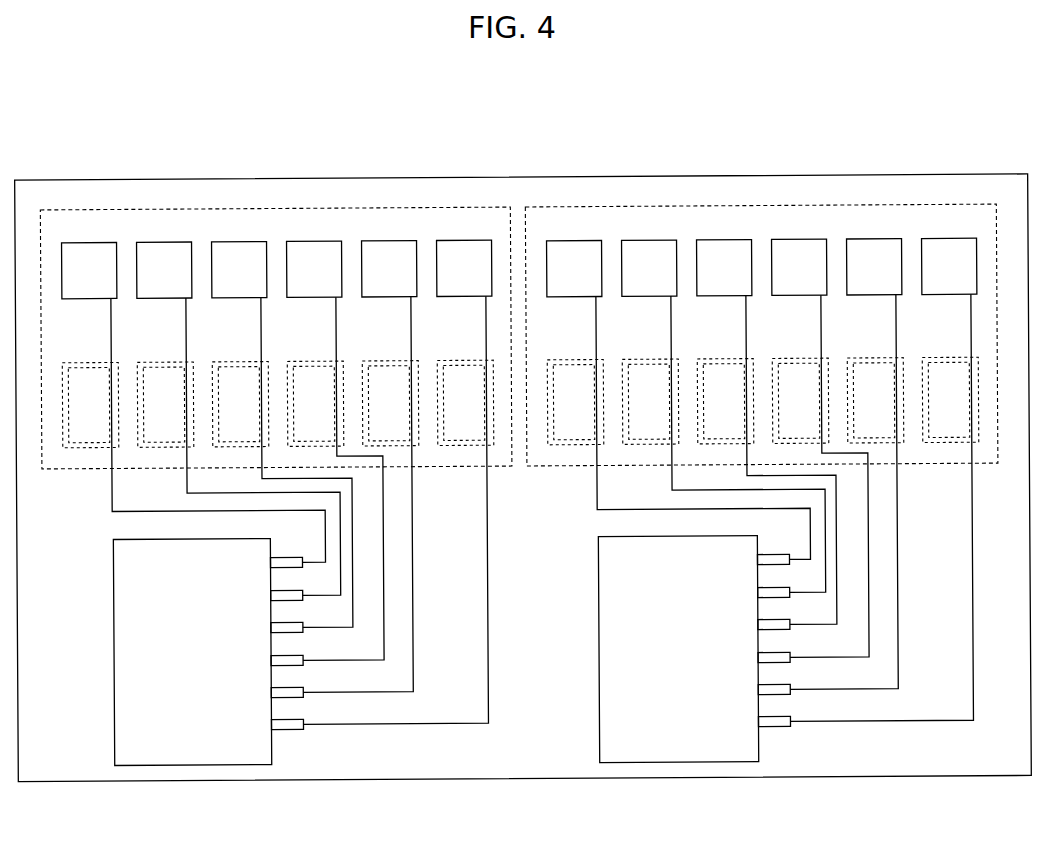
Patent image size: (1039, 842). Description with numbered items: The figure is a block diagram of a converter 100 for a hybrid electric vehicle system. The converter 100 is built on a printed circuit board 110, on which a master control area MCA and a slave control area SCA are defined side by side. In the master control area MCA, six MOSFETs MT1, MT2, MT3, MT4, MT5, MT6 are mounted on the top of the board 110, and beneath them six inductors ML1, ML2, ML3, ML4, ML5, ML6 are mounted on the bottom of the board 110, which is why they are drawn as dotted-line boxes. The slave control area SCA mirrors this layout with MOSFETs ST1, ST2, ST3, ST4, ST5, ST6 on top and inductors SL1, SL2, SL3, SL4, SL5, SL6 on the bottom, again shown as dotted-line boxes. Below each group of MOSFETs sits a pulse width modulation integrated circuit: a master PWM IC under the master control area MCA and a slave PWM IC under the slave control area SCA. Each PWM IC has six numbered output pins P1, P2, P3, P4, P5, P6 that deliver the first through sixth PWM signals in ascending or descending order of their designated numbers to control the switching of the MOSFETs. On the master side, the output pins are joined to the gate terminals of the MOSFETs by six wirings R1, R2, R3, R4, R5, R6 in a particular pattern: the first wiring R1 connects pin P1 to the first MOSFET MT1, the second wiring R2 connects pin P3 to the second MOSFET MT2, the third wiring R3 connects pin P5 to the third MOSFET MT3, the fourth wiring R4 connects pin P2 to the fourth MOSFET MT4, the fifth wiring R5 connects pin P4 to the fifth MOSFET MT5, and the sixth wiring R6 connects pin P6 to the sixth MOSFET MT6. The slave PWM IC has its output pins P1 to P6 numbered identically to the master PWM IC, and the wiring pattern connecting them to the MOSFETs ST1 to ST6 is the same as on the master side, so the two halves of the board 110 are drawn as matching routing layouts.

The converter 100 is at (638, 72).
The printed circuit board 110 is at (322, 177).
The master control area MCA is at (178, 207).
The slave control area SCA is at (788, 208).
The first MOSFET MT1 is at (464, 268).
The second MOSFET MT2 is at (389, 269).
The third MOSFET MT3 is at (314, 269).
The fourth MOSFET MT4 is at (239, 270).
The fifth MOSFET MT5 is at (164, 270).
The sixth MOSFET MT6 is at (89, 270).
The MOSFET ST1 is at (949, 266).
The MOSFET ST2 is at (874, 267).
The MOSFET ST3 is at (799, 267).
The MOSFET ST4 is at (724, 268).
The MOSFET ST5 is at (649, 268).
The MOSFET ST6 is at (574, 269).
The inductor ML1 is at (465, 402).
The inductor ML2 is at (390, 403).
The inductor ML3 is at (315, 403).
The inductor ML4 is at (240, 404).
The inductor ML5 is at (165, 404).
The inductor ML6 is at (90, 404).
The inductor SL1 is at (950, 399).
The inductor SL2 is at (875, 400).
The inductor SL3 is at (800, 400).
The inductor SL4 is at (725, 401).
The inductor SL5 is at (650, 401).
The inductor SL6 is at (575, 402).
The first wiring R1 is at (395, 510).
The second wiring R2 is at (357, 495).
The third wiring R3 is at (342, 478).
The fourth wiring R4 is at (292, 462).
The fifth wiring R5 is at (248, 446).
The sixth wiring R6 is at (203, 430).
The output pin No. 1 P1 is at (272, 724).
The output pin No. 2 P2 is at (272, 627).
The output pin No. 3 P3 is at (272, 692).
The output pin No. 4 P4 is at (272, 595).
The output pin No. 5 P5 is at (272, 660).
The output pin No. 6 P6 is at (271, 562).